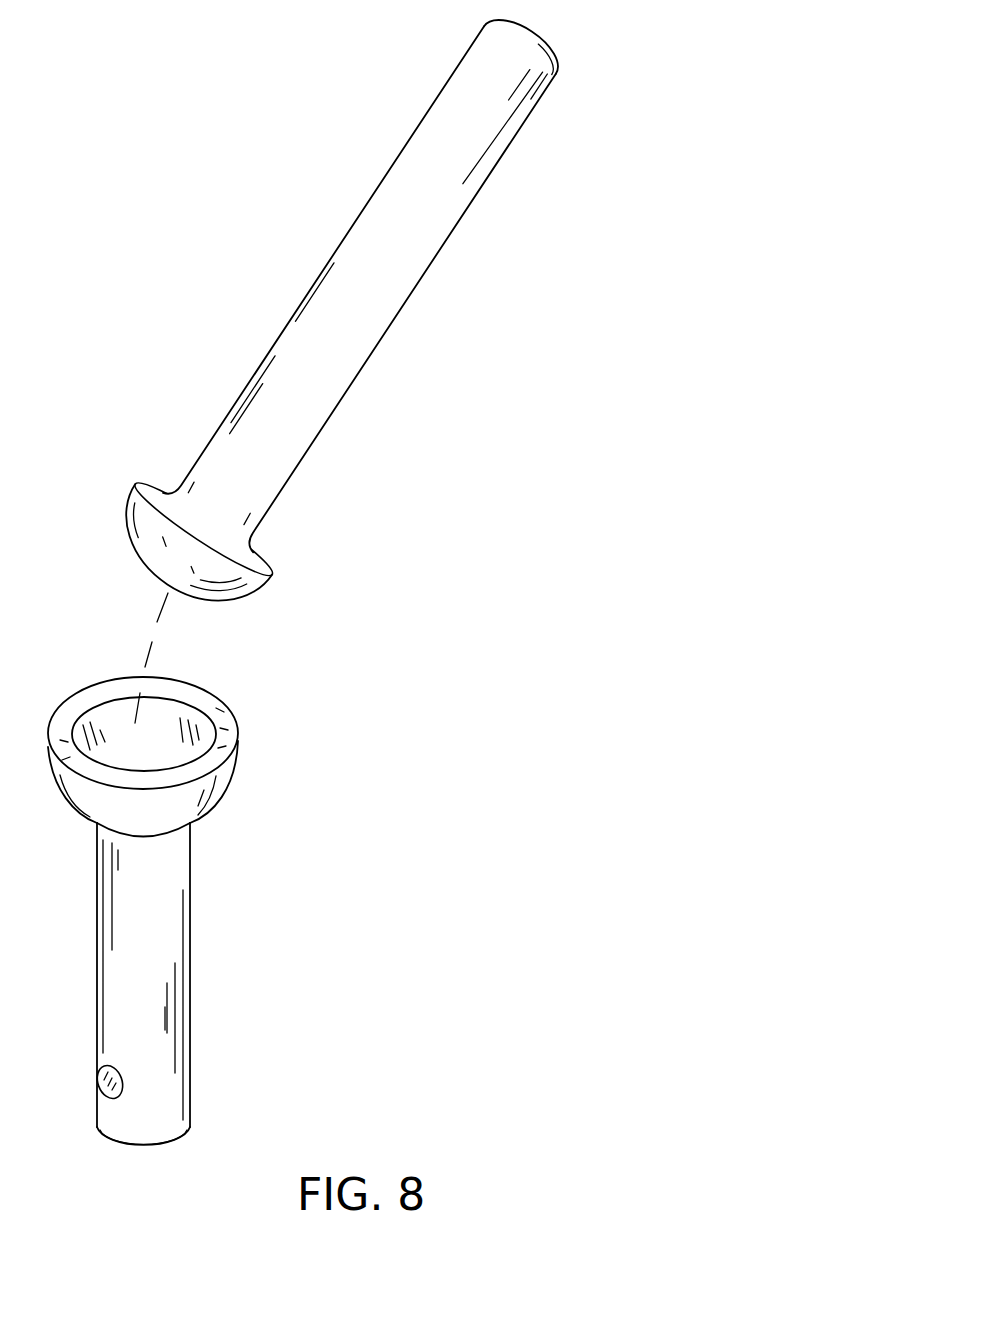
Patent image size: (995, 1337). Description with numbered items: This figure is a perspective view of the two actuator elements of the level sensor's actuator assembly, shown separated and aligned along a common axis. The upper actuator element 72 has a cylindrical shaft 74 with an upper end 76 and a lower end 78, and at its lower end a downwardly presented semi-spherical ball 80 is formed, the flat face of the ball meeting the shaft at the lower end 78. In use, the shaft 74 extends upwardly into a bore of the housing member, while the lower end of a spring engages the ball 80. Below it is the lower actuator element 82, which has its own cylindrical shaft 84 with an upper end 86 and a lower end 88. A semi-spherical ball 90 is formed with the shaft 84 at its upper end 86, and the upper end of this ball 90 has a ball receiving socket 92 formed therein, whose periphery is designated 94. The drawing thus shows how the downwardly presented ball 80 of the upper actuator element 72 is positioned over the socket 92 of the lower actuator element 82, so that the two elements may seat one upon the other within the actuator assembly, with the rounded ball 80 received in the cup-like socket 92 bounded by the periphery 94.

The upper actuator element 72 is at (355, 457).
The cylindrical shaft 74 is at (347, 347).
The upper end 76 is at (543, 42).
The lower end 78 is at (253, 540).
The semi-spherical ball 80 is at (170, 568).
The lower actuator element 82 is at (218, 955).
The cylindrical shaft 84 is at (173, 1008).
The upper end 86 is at (185, 830).
The lower end 88 is at (162, 1152).
The semi-spherical ball 90 is at (220, 773).
The ball receiving socket 92 is at (193, 720).
The periphery of socket 94 is at (227, 738).